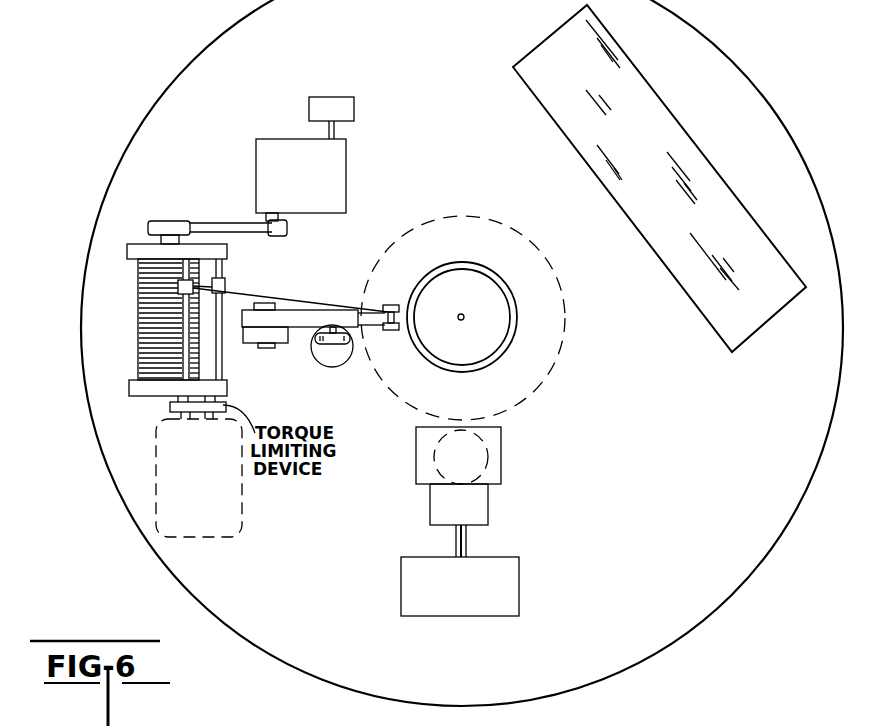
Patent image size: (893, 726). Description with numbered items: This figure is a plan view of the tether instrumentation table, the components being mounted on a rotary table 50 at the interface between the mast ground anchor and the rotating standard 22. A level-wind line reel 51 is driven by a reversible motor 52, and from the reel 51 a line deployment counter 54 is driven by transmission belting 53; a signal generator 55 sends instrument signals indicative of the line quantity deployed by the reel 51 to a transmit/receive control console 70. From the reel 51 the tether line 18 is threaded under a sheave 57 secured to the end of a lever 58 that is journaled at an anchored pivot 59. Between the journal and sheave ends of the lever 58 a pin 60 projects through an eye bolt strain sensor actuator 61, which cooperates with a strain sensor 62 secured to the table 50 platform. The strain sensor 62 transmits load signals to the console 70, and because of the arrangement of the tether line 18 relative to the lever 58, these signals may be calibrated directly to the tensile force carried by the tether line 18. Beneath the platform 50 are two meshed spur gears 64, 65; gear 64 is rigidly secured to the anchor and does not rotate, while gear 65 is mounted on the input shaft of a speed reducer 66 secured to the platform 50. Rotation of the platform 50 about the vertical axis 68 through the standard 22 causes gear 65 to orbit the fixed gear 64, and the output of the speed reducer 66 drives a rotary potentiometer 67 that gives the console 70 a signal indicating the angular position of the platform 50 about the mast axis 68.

The tether line 18 is at (250, 293).
The rotating standard 22 is at (517, 335).
The rotary table 50 is at (649, 580).
The level-wind line reel 51 is at (152, 296).
The reversible motor 52 is at (157, 452).
The transmission belting 53 is at (207, 227).
The line deployment counter 54 is at (312, 196).
The signal generator 55 is at (331, 110).
The sheave 57 is at (387, 325).
The lever 58 is at (316, 317).
The anchored pivot 59 is at (265, 350).
The pin 60 is at (340, 347).
The eye bolt strain sensor actuator 61 is at (317, 337).
The strain sensor 62 is at (328, 357).
The spur gear 64 is at (545, 390).
The spur gear 65 is at (503, 449).
The speed reducer 66 is at (416, 472).
The rotary potentiometer 67 is at (476, 593).
The vertical axis 68 is at (482, 322).
The transmit/receive control console 70 is at (658, 198).